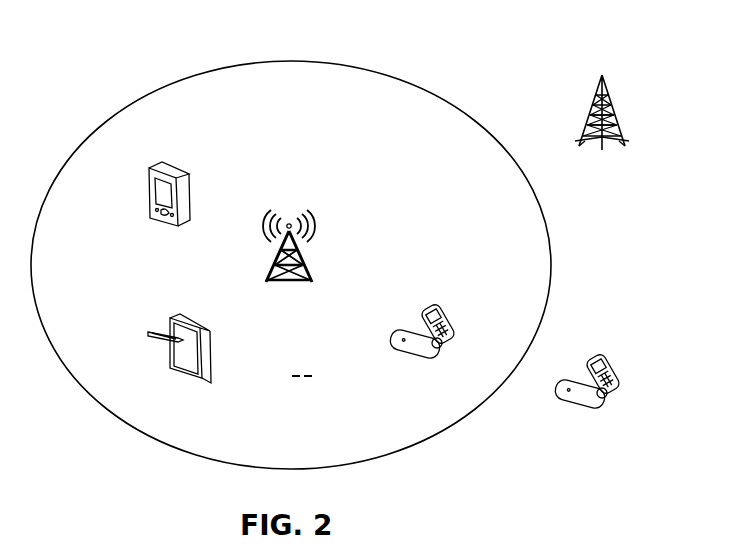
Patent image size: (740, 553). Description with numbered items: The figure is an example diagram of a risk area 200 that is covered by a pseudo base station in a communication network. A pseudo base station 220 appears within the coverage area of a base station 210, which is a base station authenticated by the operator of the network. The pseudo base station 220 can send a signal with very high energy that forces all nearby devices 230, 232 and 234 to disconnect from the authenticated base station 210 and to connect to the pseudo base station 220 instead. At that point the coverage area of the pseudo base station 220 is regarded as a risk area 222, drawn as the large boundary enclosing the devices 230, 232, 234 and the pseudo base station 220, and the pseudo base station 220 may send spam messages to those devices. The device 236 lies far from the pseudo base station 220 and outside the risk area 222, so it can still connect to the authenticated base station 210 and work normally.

The risk area diagram 200 is at (85, 72).
The base station 210 is at (608, 96).
The pseudo base station 220 is at (298, 244).
The risk area 222 is at (425, 90).
The device 230 is at (178, 170).
The device 232 is at (210, 340).
The device 234 is at (445, 308).
The device 236 is at (608, 358).